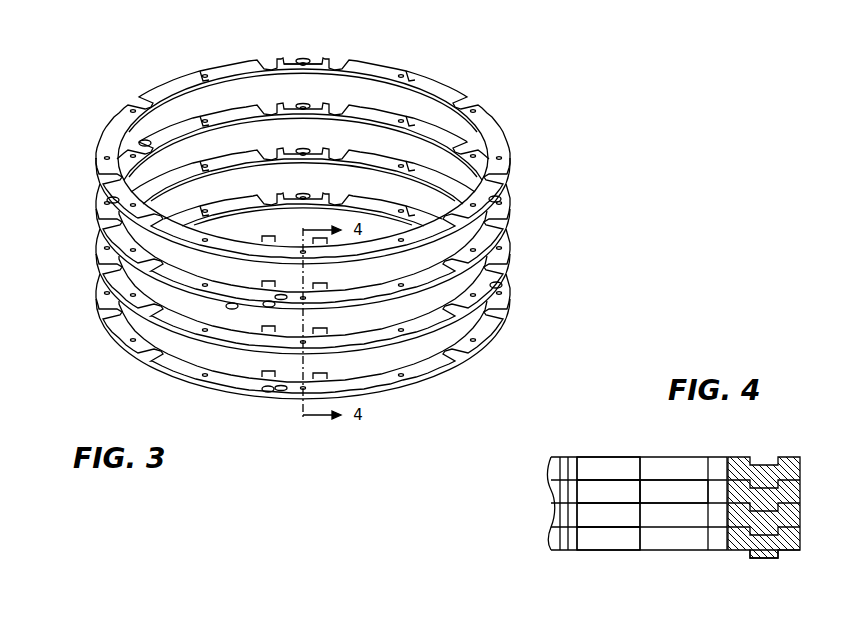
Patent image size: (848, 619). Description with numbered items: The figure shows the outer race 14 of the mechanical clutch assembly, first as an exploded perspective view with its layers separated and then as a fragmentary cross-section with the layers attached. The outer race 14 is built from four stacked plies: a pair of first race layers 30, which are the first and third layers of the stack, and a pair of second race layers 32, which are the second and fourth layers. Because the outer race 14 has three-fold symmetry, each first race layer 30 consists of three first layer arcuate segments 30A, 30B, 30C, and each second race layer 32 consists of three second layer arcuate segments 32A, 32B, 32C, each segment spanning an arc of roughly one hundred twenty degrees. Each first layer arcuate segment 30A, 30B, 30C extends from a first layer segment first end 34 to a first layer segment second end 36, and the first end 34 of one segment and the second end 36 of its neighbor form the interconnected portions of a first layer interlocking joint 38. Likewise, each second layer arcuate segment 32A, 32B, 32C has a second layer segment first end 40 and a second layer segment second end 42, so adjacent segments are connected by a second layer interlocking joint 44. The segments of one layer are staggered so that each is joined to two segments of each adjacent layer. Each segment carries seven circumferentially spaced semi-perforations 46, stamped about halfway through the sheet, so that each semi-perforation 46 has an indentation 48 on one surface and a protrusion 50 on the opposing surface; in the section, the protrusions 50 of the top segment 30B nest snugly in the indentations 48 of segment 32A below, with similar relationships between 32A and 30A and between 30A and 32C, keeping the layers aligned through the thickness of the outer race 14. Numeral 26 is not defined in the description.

In FIG. 3, the outer race 14 is at (87, 108).
In FIG. 3, the notch 26 is at (101, 176).
In FIG. 3, the first race layer 30 is at (508, 143).
In FIG. 4, the first race layer 30 is at (620, 468).
In FIG. 3, the first layer arcuate segment 30A is at (326, 308).
In FIG. 4, the first layer arcuate segment 30A is at (596, 519).
In FIG. 3, the first layer arcuate segment 30B is at (108, 257).
In FIG. 4, the first layer arcuate segment 30B is at (608, 468).
In FIG. 3, the first layer arcuate segment 30C is at (148, 106).
In FIG. 4, the second race layer 32 is at (674, 491).
In FIG. 3, the second layer arcuate segment 32A is at (212, 374).
In FIG. 4, the second layer arcuate segment 32A is at (596, 491).
In FIG. 3, the second layer arcuate segment 32B is at (316, 194).
In FIG. 3, the second layer arcuate segment 32C is at (318, 107).
In FIG. 4, the second layer arcuate segment 32C is at (656, 542).
In FIG. 3, the first layer segment first end 34 is at (321, 60).
In FIG. 3, the first layer segment second end 36 is at (285, 60).
In FIG. 3, the first layer interlocking joint 38 is at (107, 200).
In FIG. 3, the second layer segment first end 40 is at (279, 387).
In FIG. 3, the second layer segment second end 42 is at (254, 382).
In FIG. 3, the second layer interlocking joint 44 is at (266, 392).
In FIG. 4, the semi-perforation 46 is at (758, 560).
In FIG. 4, the indentation 48 is at (760, 456).
In FIG. 4, the protrusion 50 is at (782, 556).